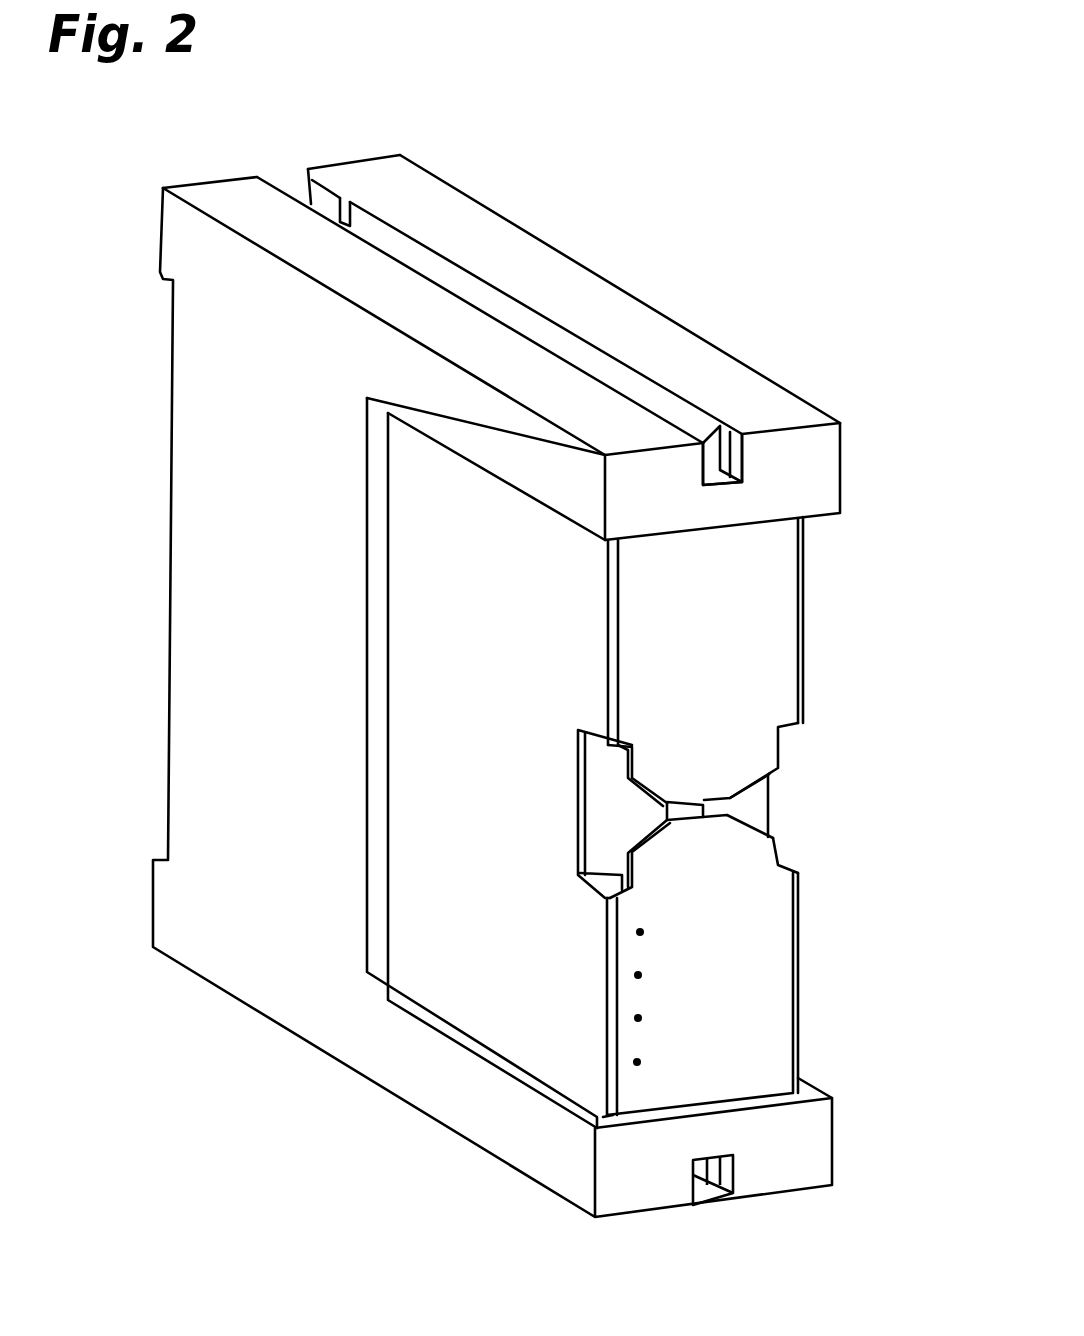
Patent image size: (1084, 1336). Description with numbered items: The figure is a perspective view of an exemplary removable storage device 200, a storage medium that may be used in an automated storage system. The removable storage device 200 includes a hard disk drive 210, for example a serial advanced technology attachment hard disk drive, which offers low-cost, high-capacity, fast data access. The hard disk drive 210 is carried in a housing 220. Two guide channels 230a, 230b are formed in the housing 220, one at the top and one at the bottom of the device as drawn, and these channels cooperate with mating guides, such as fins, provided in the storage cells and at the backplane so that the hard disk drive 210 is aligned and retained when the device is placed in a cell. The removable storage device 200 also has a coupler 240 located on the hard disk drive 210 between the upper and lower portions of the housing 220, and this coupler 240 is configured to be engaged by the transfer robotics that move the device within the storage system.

The removable storage device 200 is at (713, 267).
The hard disk drive 210 is at (644, 817).
The housing 220 is at (278, 501).
The guide channel 230a is at (712, 477).
The guide channel 230b is at (720, 1185).
The coupler 240 is at (798, 835).